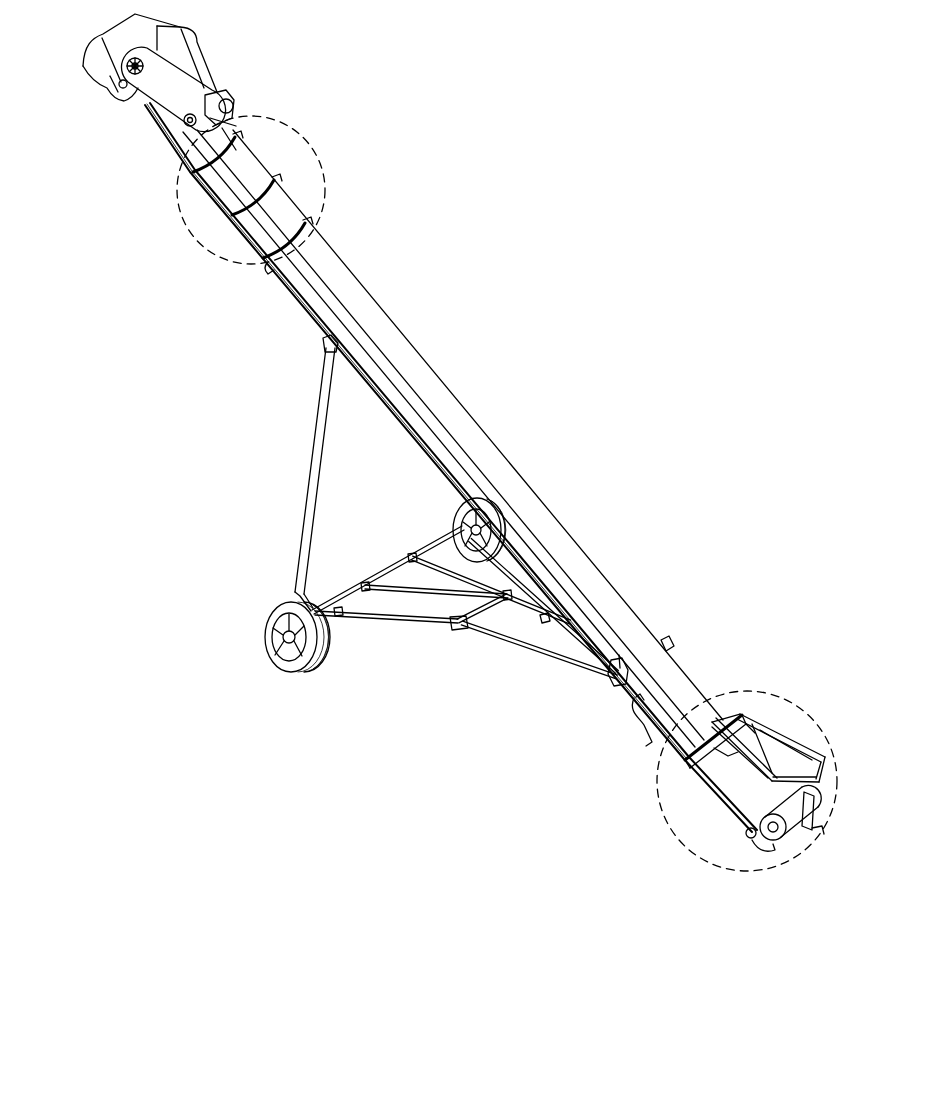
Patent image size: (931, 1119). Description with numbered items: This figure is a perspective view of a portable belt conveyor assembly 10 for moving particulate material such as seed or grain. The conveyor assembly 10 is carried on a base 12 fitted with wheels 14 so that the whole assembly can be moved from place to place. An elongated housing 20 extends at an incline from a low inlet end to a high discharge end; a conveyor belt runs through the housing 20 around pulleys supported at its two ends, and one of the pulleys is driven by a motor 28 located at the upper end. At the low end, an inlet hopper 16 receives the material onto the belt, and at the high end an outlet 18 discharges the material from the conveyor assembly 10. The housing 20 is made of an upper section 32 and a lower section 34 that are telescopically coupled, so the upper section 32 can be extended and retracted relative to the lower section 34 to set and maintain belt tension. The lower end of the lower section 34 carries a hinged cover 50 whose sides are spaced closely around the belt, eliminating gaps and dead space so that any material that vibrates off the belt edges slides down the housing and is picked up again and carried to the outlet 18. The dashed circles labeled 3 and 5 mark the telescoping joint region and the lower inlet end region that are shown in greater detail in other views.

The conveyor assembly 10 is at (576, 345).
The base 12 is at (305, 507).
The wheels 14 is at (460, 513).
The inlet hopper 16 is at (787, 753).
The outlet 18 is at (118, 100).
The elongated housing 20 is at (549, 514).
The motor 28 is at (234, 101).
The upper section 32 is at (258, 170).
The lower section 34 is at (373, 307).
The hinged cover 50 is at (793, 826).
The detail region of FIG. 3 is at (287, 124).
The detail region of FIG. 5 is at (703, 860).